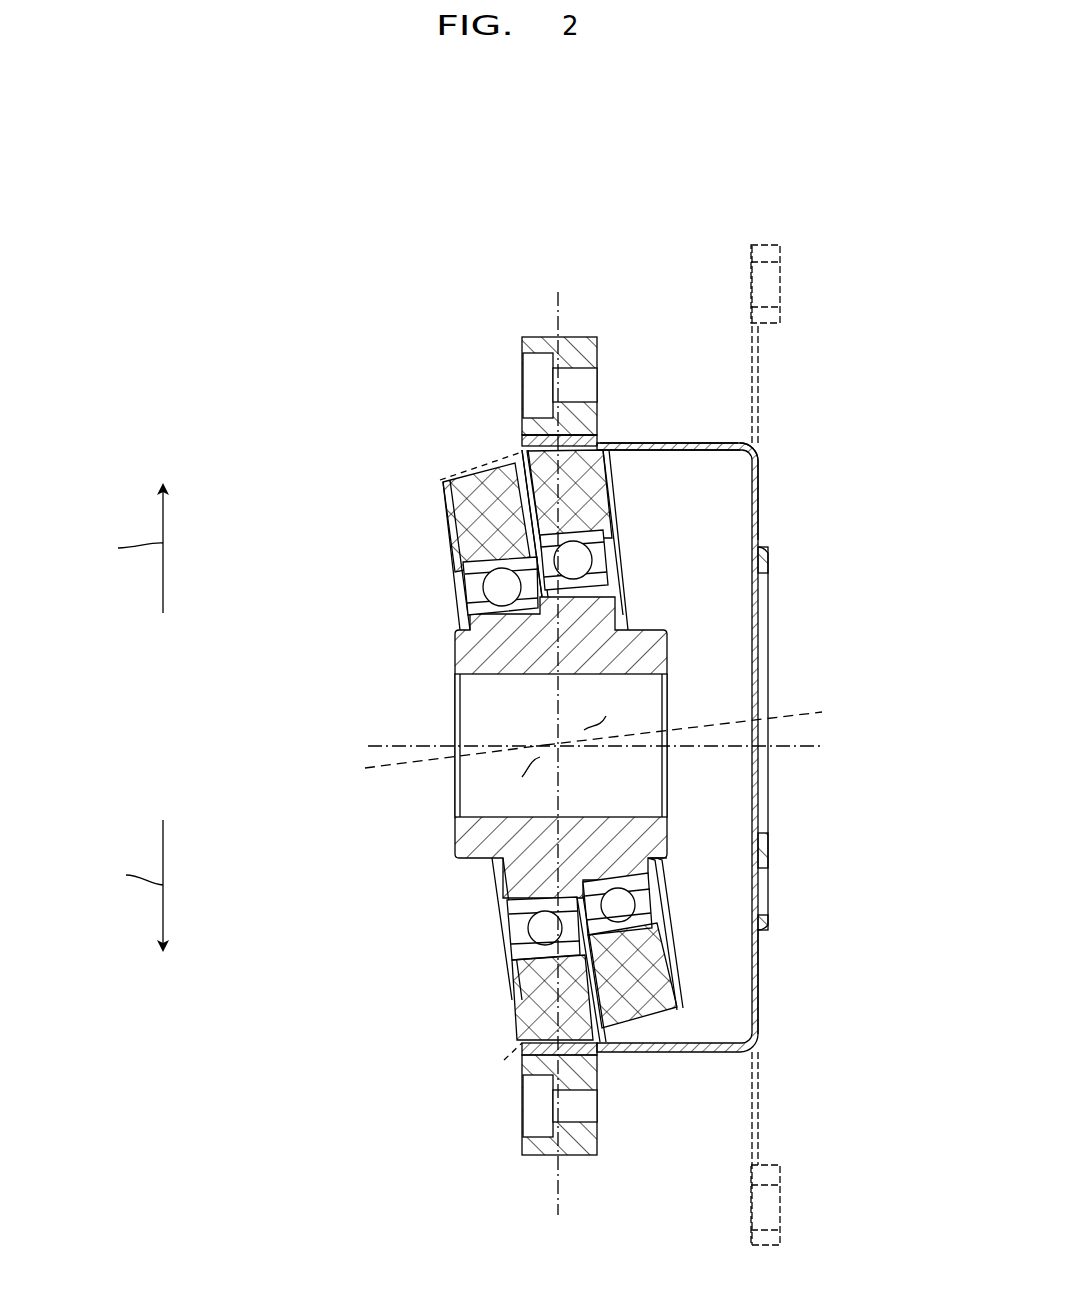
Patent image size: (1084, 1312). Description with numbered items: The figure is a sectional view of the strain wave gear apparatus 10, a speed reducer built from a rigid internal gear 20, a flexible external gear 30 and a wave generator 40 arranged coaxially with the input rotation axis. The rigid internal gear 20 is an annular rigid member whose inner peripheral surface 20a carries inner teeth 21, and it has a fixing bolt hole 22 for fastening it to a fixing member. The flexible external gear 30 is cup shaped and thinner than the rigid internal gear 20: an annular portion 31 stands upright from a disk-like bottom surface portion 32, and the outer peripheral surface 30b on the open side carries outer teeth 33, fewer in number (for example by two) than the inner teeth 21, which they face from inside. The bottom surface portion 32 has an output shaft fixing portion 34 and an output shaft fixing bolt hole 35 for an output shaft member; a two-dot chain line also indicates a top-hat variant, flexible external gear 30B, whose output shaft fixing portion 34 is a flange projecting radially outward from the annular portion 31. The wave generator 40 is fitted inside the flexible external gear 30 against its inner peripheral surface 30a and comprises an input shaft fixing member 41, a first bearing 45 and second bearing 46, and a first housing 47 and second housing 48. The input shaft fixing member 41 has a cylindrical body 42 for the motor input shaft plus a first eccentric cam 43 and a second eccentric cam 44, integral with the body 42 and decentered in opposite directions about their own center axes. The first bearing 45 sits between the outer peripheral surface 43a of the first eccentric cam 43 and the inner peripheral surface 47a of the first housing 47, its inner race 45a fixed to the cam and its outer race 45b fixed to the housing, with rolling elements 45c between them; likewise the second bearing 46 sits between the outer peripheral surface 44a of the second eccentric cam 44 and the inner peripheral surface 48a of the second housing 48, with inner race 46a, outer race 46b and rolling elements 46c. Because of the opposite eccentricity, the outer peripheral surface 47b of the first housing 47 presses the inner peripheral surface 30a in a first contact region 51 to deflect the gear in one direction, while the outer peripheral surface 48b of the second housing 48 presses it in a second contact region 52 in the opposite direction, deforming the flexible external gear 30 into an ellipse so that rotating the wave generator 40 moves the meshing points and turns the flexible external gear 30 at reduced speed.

The strain wave gear apparatus 10 is at (693, 137).
The rigid internal gear 20 is at (592, 346).
The inner peripheral surface 20a is at (600, 440).
The inner teeth 21 is at (522, 455).
The fixing bolt hole 22 is at (546, 1103).
The flexible external gear 30 is at (760, 716).
The inner peripheral surface 30a is at (663, 452).
The outer peripheral surface 30b is at (658, 440).
The flexible external gear 30B is at (780, 288).
The annular portion 31 is at (700, 441).
The bottom surface portion 32 is at (760, 488).
The outer teeth 33 is at (530, 436).
The output shaft fixing portion 34 is at (763, 930).
The output shaft fixing bolt hole 35 is at (763, 600).
The wave generator 40 is at (340, 584).
The input shaft fixing member 41 is at (509, 674).
The body 42 is at (462, 700).
The first eccentric cam 43 is at (466, 672).
The outer peripheral surface 43a is at (665, 822).
The second eccentric cam 44 is at (515, 554).
The outer peripheral surface 44a is at (500, 888).
The first bearing 45 is at (745, 875).
The inner race 45a is at (643, 880).
The outer race 45b is at (645, 925).
The rolling elements 45c is at (630, 904).
The second bearing 46 is at (461, 933).
The inner race 46a is at (527, 906).
The outer race 46b is at (528, 950).
The rolling elements 46c is at (532, 930).
The first housing 47 is at (613, 497).
The inner peripheral surface 47a is at (665, 975).
The outer peripheral surface 47b is at (568, 403).
The second housing 48 is at (447, 520).
The inner peripheral surface 48a is at (518, 985).
The outer peripheral surface 48b is at (588, 1068).
The first contact region 51 is at (516, 468).
The second contact region 52 is at (505, 1060).